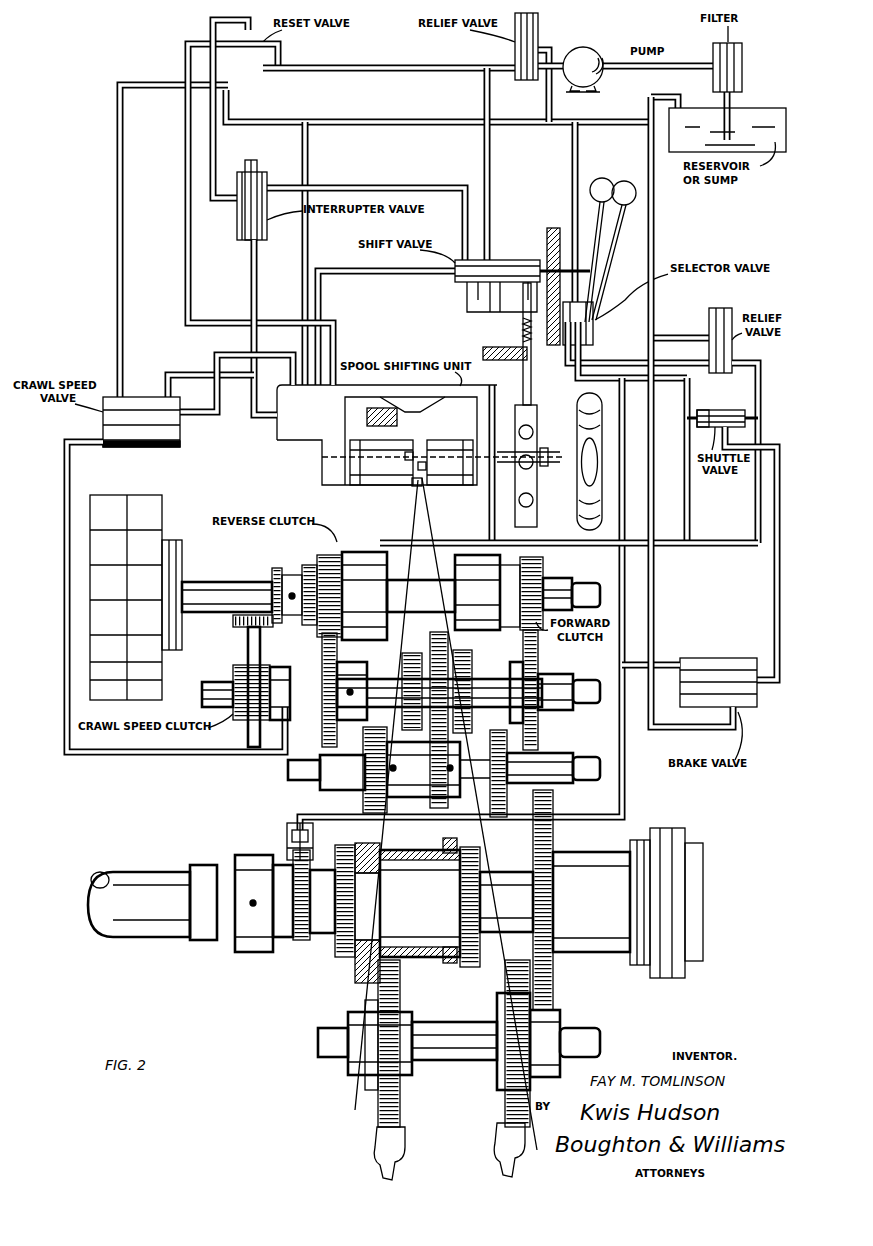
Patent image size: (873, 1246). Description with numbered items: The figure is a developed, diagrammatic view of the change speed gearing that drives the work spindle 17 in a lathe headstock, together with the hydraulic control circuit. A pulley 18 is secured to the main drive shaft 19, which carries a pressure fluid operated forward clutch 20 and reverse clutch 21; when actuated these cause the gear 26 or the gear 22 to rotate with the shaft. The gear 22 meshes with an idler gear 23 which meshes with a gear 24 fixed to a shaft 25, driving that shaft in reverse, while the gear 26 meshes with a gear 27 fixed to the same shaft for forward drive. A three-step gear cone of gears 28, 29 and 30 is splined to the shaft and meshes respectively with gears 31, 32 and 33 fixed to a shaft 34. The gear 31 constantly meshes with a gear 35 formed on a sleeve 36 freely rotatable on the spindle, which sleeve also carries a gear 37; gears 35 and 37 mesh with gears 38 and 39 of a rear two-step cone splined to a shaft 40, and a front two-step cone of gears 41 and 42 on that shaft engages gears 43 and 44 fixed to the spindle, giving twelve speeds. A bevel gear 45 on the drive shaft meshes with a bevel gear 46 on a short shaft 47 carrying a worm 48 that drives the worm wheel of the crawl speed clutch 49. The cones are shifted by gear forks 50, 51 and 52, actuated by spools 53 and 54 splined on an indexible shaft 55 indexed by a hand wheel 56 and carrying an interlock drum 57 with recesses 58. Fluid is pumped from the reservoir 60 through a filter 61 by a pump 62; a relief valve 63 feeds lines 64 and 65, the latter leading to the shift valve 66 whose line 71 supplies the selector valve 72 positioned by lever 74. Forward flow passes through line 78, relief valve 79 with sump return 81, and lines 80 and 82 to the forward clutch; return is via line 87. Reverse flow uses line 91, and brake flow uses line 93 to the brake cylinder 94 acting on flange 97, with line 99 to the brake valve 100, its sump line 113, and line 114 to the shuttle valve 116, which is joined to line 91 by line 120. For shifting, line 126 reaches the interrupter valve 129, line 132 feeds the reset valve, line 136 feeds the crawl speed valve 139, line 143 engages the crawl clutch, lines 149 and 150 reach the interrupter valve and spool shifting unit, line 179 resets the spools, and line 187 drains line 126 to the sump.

The spindle 17 is at (598, 854).
The pulley 18 is at (162, 516).
The main drive shaft 19 is at (222, 582).
The forward clutch 20 is at (470, 553).
The reverse clutch 21 is at (360, 552).
The gear 22 is at (330, 555).
The idler gear 23 is at (337, 661).
The gear 24 is at (337, 719).
The shaft 25 is at (600, 676).
The gear 26 is at (543, 567).
The gear 27 is at (538, 666).
The gear 28 is at (410, 653).
The gear 29 is at (423, 760).
The gear 30 is at (472, 650).
The gear 31 is at (365, 751).
The gear 32 is at (430, 796).
The gear 33 is at (497, 731).
The shaft 34 is at (560, 754).
The gear 35 is at (357, 849).
The sleeve 36 is at (403, 851).
The gear 37 is at (446, 839).
The gear 38 is at (365, 1096).
The gear 39 is at (378, 1106).
The shaft 40 is at (452, 1023).
The gear 41 is at (505, 1117).
The gear 42 is at (560, 1020).
The gear 43 is at (465, 962).
The gear 44 is at (553, 982).
The bevel gear 45 is at (277, 568).
The bevel gear 46 is at (233, 627).
The short shaft 47 is at (248, 741).
The worm 48 is at (268, 665).
The crawl speed clutch 49 is at (288, 672).
The gear fork 50 is at (408, 452).
The gear fork 51 is at (412, 487).
The gear fork 52 is at (424, 462).
The spool 53 is at (372, 487).
The spool 54 is at (450, 487).
The indexible shaft 55 is at (545, 453).
The hand wheel or knob 56 is at (602, 430).
The interlock drum 57 is at (537, 420).
The openings or recesses 58 is at (534, 501).
The reservoir or sump 60 is at (762, 114).
The filter 61 is at (742, 60).
The pump 62 is at (592, 53).
The relief valve 63 is at (538, 33).
The hydraulic circuit line 64 is at (393, 64).
The hydraulic circuit line 65 is at (489, 178).
The shift valve 66 is at (500, 260).
The line 71 is at (482, 316).
The selector valve 72 is at (593, 314).
The manually operated lever 74 is at (608, 263).
The line 78 is at (680, 362).
The relief valve 79 is at (720, 308).
The line 80 is at (760, 387).
The sump return line 81 is at (682, 338).
The line 82 is at (722, 543).
The line 87 is at (577, 180).
The line 91 is at (688, 502).
The line 93 is at (622, 362).
The brake cylinder 94 is at (287, 842).
The annular flange 97 is at (300, 942).
The line 99 is at (640, 662).
The brake valve 100 is at (715, 658).
The line 113 is at (705, 730).
The line 114 is at (776, 612).
The shuttle valve 116 is at (735, 410).
The line 120 is at (701, 410).
The line 126 is at (395, 187).
The interrupter valve 129 is at (267, 174).
The line 132 is at (212, 32).
The line 136 is at (119, 126).
The crawl speed valve 139 is at (140, 398).
The line 143 is at (70, 487).
The line 149 is at (173, 375).
The line 150 is at (262, 420).
The line 179 is at (186, 144).
The line 187 is at (221, 355).